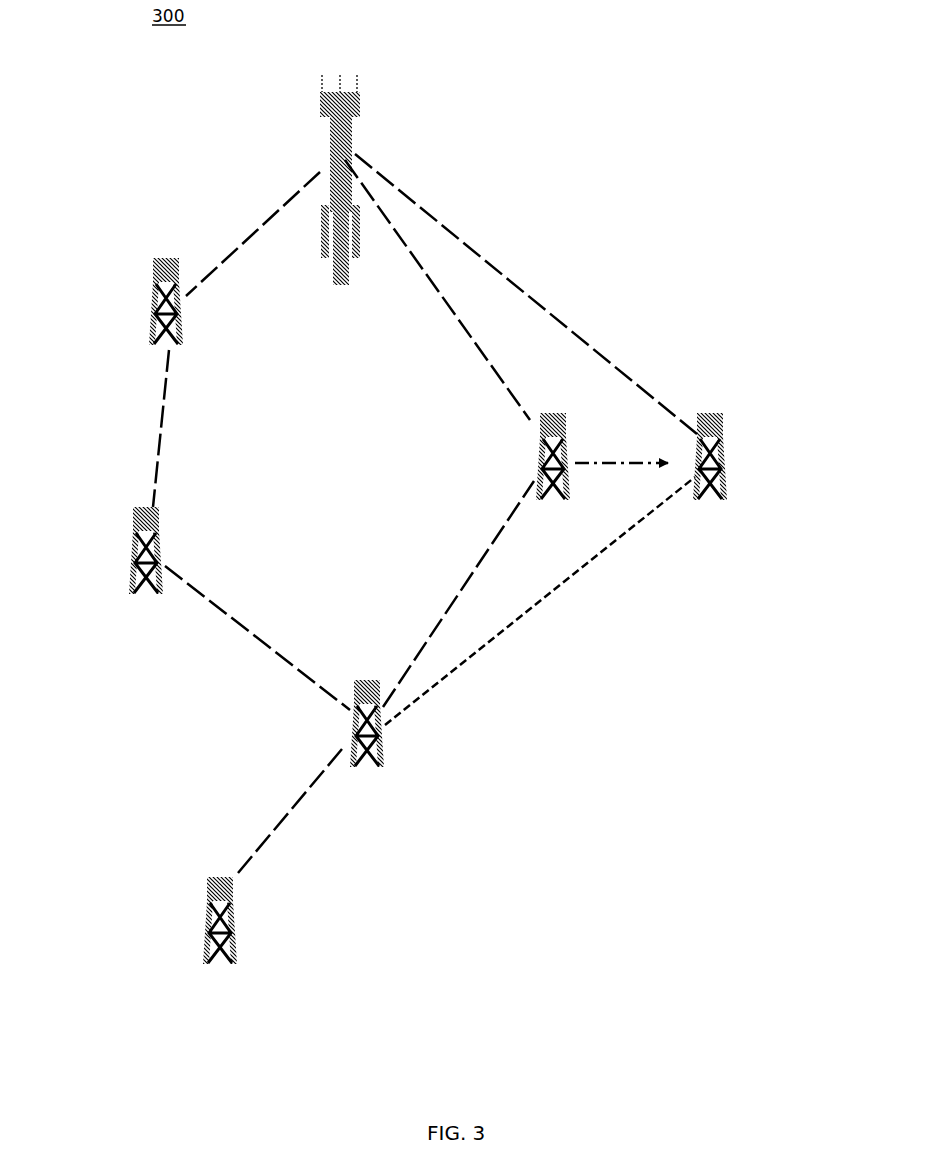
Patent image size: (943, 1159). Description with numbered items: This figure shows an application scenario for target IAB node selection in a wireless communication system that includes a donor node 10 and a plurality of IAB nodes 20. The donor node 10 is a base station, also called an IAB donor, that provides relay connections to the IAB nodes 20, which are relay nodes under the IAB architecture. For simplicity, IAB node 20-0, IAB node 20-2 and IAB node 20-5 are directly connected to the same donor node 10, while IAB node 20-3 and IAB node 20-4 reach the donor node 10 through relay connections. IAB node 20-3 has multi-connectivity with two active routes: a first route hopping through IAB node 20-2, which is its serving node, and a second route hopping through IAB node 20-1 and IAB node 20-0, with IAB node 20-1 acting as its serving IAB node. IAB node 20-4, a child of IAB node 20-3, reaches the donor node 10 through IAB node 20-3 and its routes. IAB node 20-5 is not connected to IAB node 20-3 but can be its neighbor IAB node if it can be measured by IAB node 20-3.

The donor node 10 is at (352, 140).
The IAB node 20 is at (738, 501).
The IAB node 20-0 is at (150, 306).
The IAB node 20-1 is at (133, 551).
The IAB node 20-2 is at (535, 432).
The IAB node 20-3 is at (387, 750).
The IAB node 20-4 is at (236, 930).
The IAB node 20-5 is at (724, 432).